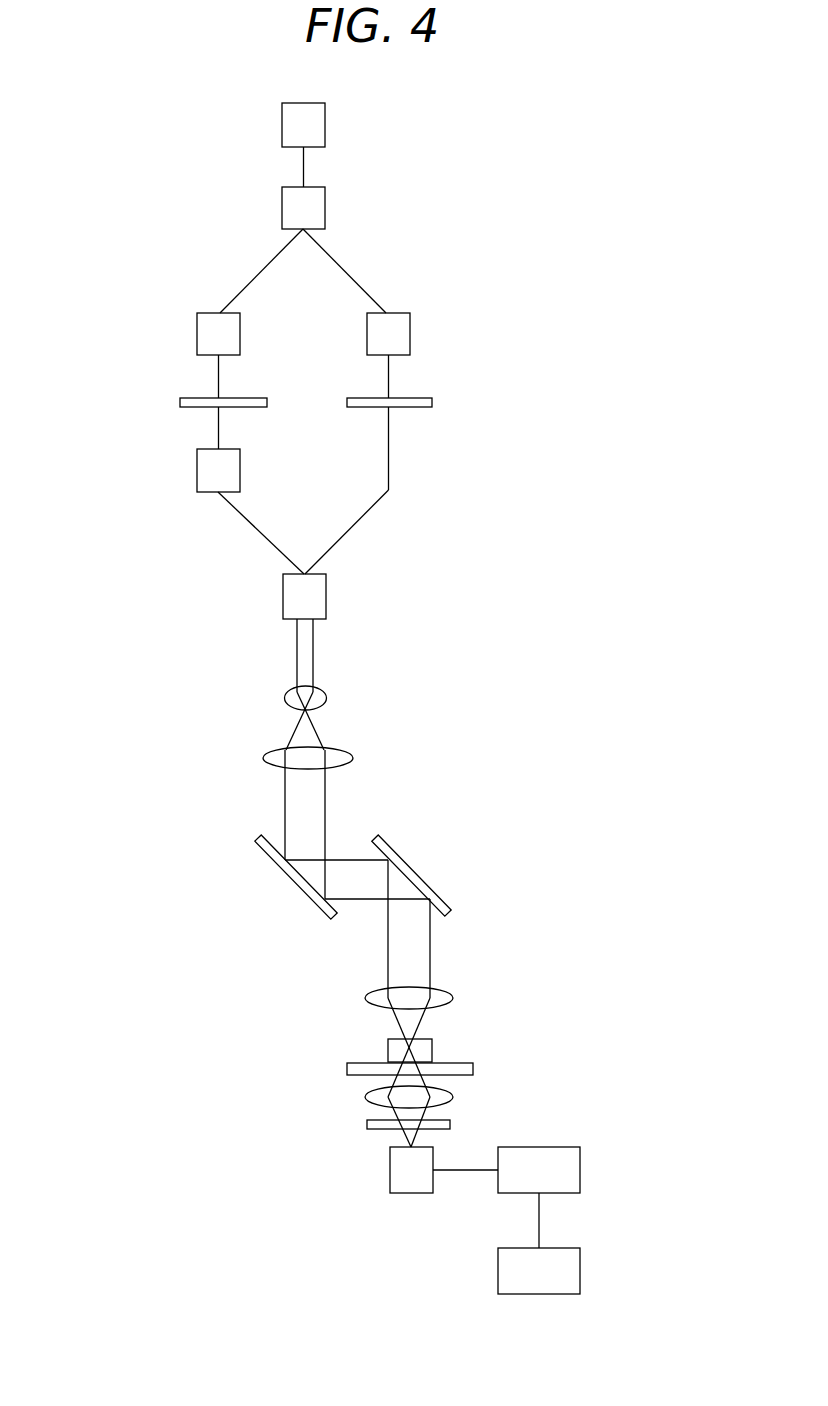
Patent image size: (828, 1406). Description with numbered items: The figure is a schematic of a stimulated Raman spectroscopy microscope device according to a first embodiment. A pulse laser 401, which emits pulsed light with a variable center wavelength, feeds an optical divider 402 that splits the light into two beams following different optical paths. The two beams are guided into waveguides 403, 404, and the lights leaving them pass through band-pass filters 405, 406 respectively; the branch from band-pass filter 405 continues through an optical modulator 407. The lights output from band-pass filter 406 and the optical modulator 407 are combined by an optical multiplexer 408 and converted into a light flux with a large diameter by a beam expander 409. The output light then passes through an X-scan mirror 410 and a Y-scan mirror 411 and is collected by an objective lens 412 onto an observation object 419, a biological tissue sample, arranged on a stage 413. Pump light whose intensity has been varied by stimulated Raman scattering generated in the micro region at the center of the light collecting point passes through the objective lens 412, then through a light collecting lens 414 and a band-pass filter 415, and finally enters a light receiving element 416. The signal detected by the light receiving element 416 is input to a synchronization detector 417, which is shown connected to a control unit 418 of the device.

The pulse laser 401 is at (325, 127).
The optical divider 402 is at (325, 210).
The waveguide 403 is at (197, 330).
The waveguide 404 is at (410, 332).
The band-pass filter 405 is at (180, 402).
The band-pass filter 406 is at (432, 404).
The optical modulator 407 is at (197, 473).
The optical multiplexer 408 is at (283, 592).
The beam expander 409 is at (260, 685).
The X-scan mirror 410 is at (326, 921).
The Y-scan mirror 411 is at (449, 912).
The objective lens 412 is at (453, 998).
The stage 413 is at (473, 1069).
The light collecting lens 414 is at (453, 1103).
The band-pass filter 415 is at (450, 1125).
The light receiving element 416 is at (390, 1168).
The synchronization detector 417 is at (580, 1172).
The control unit 418 is at (580, 1272).
The observation object 419 is at (390, 1040).